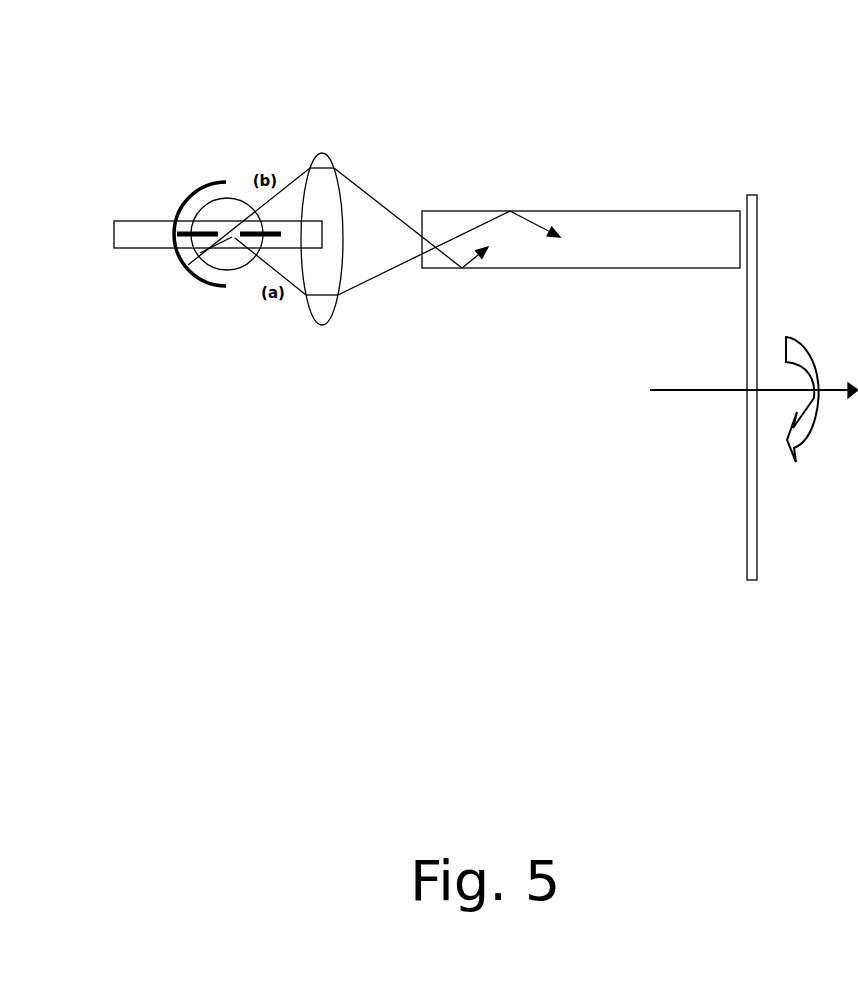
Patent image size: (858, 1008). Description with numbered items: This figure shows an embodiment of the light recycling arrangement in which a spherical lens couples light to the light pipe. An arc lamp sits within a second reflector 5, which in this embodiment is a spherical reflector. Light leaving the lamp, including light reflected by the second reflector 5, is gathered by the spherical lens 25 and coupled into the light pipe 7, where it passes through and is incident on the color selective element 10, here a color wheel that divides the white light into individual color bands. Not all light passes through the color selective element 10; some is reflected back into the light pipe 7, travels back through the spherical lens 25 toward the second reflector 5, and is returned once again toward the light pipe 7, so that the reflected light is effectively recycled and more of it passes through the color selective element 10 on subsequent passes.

The second reflector 5 is at (202, 285).
The spherical lens 25 is at (313, 153).
The light pipe 7 is at (537, 268).
The color selective element 10 is at (763, 557).